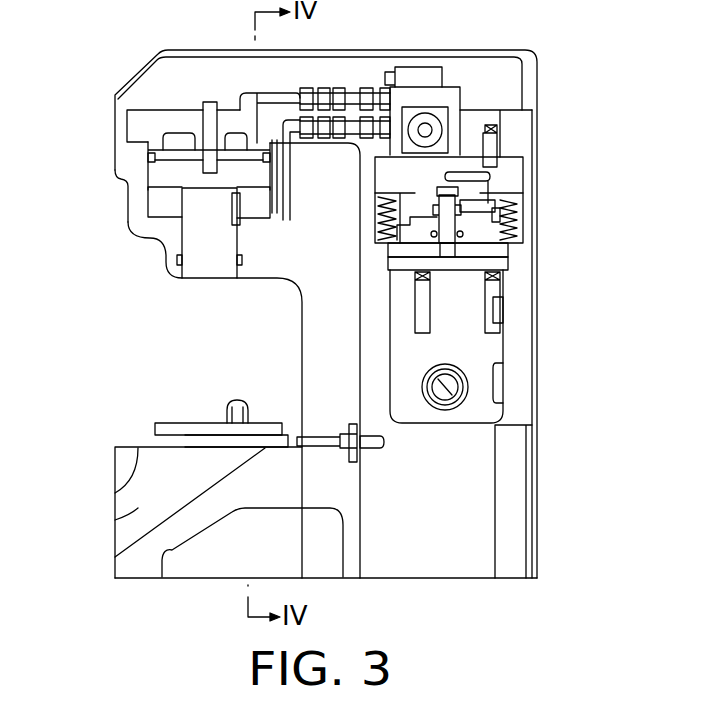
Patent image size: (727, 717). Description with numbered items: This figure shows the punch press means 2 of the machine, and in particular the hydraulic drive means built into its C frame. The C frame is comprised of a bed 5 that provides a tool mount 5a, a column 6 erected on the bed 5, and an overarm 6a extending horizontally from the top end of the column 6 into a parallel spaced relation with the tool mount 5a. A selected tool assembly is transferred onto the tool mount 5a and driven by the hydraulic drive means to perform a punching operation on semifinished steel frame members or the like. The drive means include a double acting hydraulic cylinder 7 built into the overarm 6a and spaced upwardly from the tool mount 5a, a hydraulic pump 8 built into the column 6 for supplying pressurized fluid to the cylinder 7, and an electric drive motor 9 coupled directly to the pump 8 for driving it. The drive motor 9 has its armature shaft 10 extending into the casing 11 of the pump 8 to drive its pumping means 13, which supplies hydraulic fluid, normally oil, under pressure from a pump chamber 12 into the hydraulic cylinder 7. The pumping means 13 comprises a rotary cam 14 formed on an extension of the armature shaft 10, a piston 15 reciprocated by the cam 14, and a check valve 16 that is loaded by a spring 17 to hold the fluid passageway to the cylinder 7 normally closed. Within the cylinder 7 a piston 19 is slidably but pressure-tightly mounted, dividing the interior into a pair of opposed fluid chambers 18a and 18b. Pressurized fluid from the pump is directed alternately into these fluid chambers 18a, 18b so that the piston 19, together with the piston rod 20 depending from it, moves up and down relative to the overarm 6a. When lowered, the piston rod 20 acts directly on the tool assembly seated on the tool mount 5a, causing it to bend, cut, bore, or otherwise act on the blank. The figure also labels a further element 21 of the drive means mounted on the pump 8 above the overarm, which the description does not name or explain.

The punch press means 2 is at (578, 55).
The bed 5 is at (138, 512).
The tool mount 5a is at (157, 440).
The column 6 is at (536, 400).
The overarm 6a is at (147, 228).
The double acting hydraulic cylinder 7 is at (112, 181).
The hydraulic pump 8 is at (541, 158).
The electric drive motor 9 is at (493, 345).
The armature shaft 10 is at (447, 240).
The casing 11 is at (377, 213).
The pump chamber 12 is at (413, 216).
The pumping means 13 is at (502, 174).
The rotary cam 14 is at (440, 210).
The piston 15 is at (520, 234).
The check valve 16 is at (488, 210).
The spring 17 is at (513, 213).
The fluid chamber 18a is at (172, 143).
The fluid chamber 18b is at (182, 185).
The piston 19 is at (190, 175).
The piston rod 20 is at (203, 270).
The control valve 21 is at (423, 121).